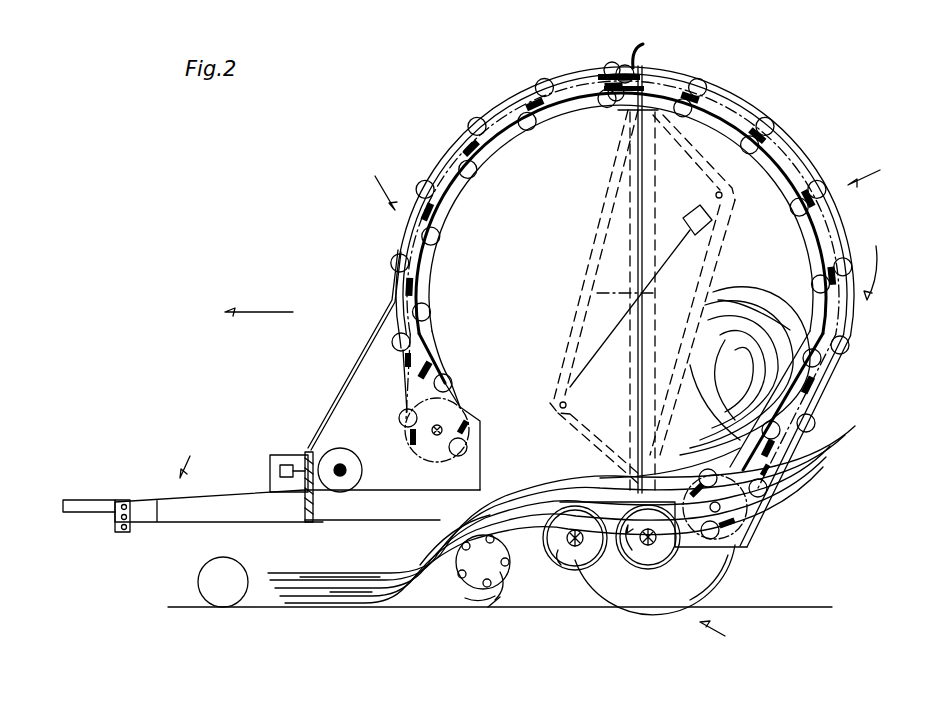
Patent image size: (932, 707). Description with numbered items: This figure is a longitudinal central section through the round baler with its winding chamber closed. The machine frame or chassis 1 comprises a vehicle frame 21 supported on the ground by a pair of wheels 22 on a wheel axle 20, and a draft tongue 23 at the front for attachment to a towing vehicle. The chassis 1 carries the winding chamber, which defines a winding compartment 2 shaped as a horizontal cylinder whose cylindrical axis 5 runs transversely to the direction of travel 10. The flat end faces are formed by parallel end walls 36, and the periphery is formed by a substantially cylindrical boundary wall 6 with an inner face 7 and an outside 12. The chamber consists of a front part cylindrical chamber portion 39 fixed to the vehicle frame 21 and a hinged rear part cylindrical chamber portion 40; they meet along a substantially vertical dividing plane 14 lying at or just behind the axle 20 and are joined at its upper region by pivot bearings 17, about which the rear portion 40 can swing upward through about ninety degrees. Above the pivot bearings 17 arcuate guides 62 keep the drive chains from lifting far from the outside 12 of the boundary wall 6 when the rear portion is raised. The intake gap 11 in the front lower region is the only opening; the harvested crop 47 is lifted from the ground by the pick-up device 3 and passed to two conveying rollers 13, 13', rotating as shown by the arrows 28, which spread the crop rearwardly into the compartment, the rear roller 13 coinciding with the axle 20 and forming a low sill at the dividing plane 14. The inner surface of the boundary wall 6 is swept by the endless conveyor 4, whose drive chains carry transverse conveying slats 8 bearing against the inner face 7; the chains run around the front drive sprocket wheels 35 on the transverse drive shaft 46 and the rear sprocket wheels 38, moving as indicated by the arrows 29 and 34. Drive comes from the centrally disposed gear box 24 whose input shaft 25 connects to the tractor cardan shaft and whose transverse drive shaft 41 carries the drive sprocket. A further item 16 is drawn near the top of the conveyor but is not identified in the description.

The machine frame or chassis 1 is at (500, 632).
The winding compartment 2 is at (553, 271).
The pick-up device 3 is at (500, 568).
The conveying device or endless conveyor 4 is at (485, 99).
The cylindrical axis 5 is at (628, 297).
The boundary wall 6 is at (745, 107).
The inner face 7 is at (813, 180).
The transverse conveying slats 8 is at (470, 148).
The direction of travel 10 is at (259, 296).
The intake gap 11 is at (392, 495).
The outside of the boundary wall 12 is at (763, 168).
The rear conveying roller 13 is at (635, 575).
The front conveying roller 13' is at (575, 574).
The dividing plane 14 is at (638, 150).
The roller 16 is at (546, 80).
The pivot bearings 17 is at (648, 70).
The wheel axle 20 is at (657, 540).
The vehicle frame 21 is at (380, 515).
The wheels 22 is at (703, 568).
The draft tongue 23 is at (214, 520).
The gear box 24 is at (308, 448).
The input shaft 25 is at (280, 470).
The arrows 28 is at (556, 562).
The arrow 29 is at (797, 244).
The arrow 34 is at (881, 260).
The front guide and drive rollers or sprocket wheels 35 is at (427, 447).
The end walls 36 is at (447, 252).
The rear guide rollers or sprocket wheels 38 is at (738, 512).
The front part cylindrical chamber portion 39 is at (601, 310).
The rear part cylindrical chamber portion 40 is at (869, 168).
The transverse drive shaft 41 is at (346, 452).
The horizontal transverse drive shaft 46 is at (440, 427).
The harvested crop 47 is at (305, 583).
The arcuate guides 62 is at (635, 45).